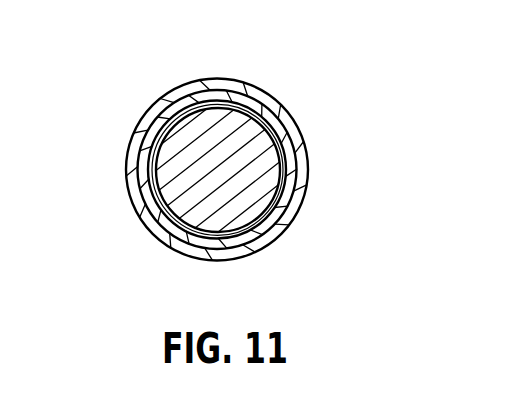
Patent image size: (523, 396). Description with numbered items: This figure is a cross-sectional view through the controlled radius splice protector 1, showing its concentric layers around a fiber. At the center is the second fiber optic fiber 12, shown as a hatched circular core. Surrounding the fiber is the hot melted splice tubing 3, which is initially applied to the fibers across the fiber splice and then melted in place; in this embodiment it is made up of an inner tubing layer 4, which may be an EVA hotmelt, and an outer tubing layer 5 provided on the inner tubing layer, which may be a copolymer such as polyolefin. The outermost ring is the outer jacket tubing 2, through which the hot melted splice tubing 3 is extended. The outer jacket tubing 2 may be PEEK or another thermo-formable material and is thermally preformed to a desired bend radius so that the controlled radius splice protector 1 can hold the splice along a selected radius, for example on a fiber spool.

The controlled radius splice protector 1 is at (293, 82).
The outer jacket tubing 2 is at (303, 135).
The hot melted splice tubing 3 is at (310, 189).
The inner tubing layer 4 is at (243, 233).
The outer tubing layer 5 is at (282, 229).
The second fiber optic fiber 12 is at (213, 166).